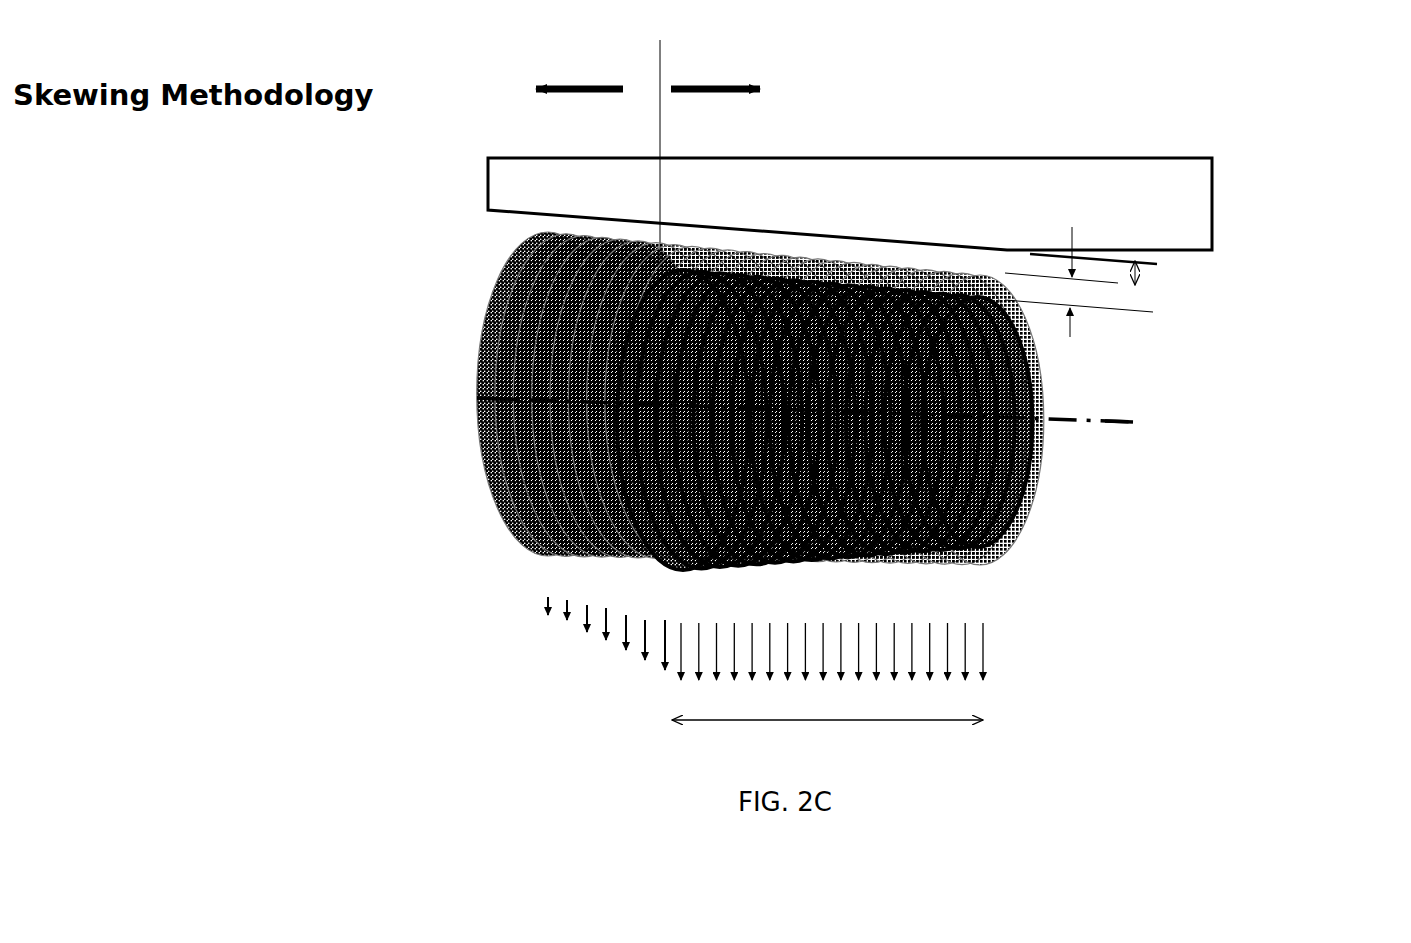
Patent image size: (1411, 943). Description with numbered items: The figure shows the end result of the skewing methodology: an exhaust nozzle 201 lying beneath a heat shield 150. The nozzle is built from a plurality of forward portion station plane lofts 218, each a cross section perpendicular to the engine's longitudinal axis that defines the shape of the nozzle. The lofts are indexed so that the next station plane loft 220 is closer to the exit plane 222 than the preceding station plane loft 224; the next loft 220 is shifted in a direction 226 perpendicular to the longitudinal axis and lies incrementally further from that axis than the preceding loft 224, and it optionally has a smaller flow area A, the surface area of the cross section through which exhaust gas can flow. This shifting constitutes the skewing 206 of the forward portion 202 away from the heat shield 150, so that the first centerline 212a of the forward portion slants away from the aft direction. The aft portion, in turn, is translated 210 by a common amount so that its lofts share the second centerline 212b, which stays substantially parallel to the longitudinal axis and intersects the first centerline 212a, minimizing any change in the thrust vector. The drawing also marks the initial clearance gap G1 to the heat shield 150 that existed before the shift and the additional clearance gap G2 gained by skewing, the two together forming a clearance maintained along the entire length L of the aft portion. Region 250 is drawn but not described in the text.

The heat shield 150 is at (850, 151).
The exhaust nozzle 201 is at (708, 385).
The forward portion 202 is at (691, 386).
The skewing 206 is at (343, 582).
The translation 210 is at (983, 642).
The first centerline 212a is at (532, 407).
The second centerline 212b is at (1078, 423).
The forward portion station plane lofts 218 is at (488, 492).
The (n+1)th station plane loft 220 is at (568, 307).
The exit plane 222 is at (1035, 386).
The nth station plane loft 224 is at (575, 287).
The direction 226 is at (547, 602).
The transition region 250 is at (692, 606).
The flow area A is at (532, 407).
The length L is at (945, 717).
The initial clearance gap G1 is at (1135, 275).
The additional clearance gap G2 is at (1072, 326).